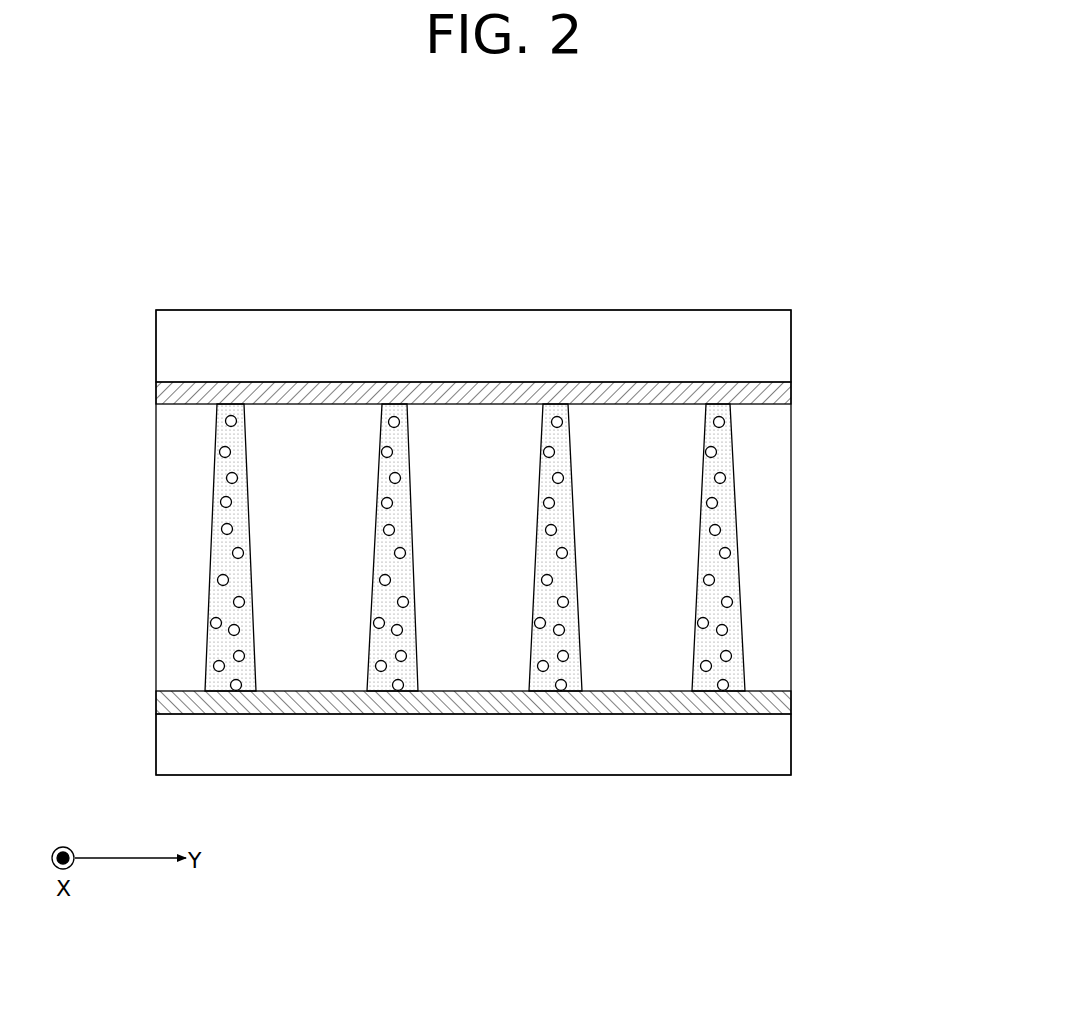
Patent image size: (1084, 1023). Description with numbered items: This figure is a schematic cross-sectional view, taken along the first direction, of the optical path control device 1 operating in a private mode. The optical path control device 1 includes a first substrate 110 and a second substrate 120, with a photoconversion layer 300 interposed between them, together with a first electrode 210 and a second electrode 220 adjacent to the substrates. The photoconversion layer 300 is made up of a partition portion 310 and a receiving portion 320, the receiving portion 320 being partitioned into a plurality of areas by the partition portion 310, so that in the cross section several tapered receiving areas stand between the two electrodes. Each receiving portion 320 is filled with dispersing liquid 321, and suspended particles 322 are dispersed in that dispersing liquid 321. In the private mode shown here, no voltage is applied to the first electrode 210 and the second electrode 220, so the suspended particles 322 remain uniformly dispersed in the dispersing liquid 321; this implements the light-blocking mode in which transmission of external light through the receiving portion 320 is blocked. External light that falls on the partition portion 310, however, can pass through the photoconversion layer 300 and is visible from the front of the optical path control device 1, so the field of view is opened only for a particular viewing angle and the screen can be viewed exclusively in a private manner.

The optical path control device 1 is at (636, 282).
The first substrate 110 is at (792, 750).
The second substrate 120 is at (792, 343).
The first electrode 210 is at (792, 698).
The second electrode 220 is at (792, 390).
The photoconversion layer 300 is at (580, 547).
The partition portion 310 is at (763, 483).
The receiving portion 320 is at (545, 547).
The dispersing liquid 321 is at (738, 614).
The suspended particles 322 is at (742, 652).